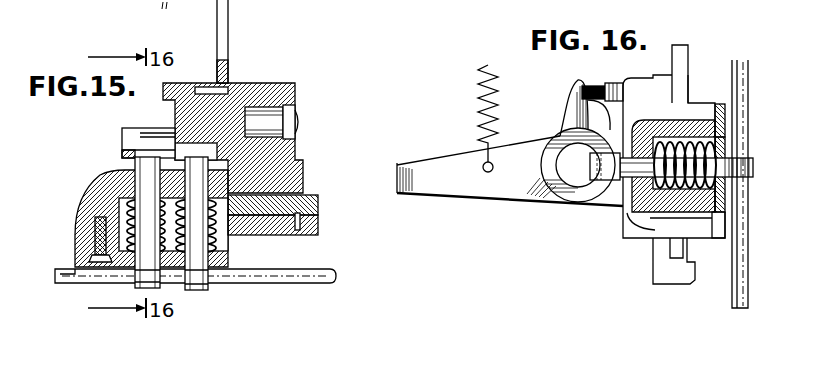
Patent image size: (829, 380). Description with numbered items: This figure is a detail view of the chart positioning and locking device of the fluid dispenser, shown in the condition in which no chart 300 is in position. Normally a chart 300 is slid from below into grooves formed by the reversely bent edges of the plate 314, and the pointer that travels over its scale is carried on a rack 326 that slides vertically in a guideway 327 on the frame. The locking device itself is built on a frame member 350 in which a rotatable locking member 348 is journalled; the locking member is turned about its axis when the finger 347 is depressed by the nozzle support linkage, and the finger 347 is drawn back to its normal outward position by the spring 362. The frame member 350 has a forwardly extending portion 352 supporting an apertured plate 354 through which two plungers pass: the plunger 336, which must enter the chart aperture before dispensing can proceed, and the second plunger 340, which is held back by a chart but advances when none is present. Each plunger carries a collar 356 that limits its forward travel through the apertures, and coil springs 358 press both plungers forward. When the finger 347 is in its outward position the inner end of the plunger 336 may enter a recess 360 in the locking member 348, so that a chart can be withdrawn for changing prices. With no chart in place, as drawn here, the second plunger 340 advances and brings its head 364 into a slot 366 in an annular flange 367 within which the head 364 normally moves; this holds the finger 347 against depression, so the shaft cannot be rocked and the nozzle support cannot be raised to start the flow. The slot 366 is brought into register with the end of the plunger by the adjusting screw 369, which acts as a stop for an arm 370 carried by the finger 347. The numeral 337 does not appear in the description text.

In FIG. 15, the chart 300 is at (293, 284).
In FIG. 16, the chart 300 is at (740, 280).
In FIG. 15, the plate 314 is at (317, 272).
In FIG. 16, the plate 314 is at (730, 300).
In FIG. 15, the rack 326 is at (283, 225).
In FIG. 16, the rack 326 is at (682, 53).
In FIG. 15, the guideway 327 is at (322, 212).
In FIG. 16, the guideway 327 is at (662, 276).
In FIG. 15, the plunger 336 is at (200, 290).
In FIG. 15, the bar 337 is at (92, 3).
In FIG. 15, the second plunger 340 is at (135, 287).
In FIG. 16, the second plunger 340 is at (723, 167).
In FIG. 15, the finger 347 is at (222, 20).
In FIG. 16, the finger 347 is at (451, 167).
In FIG. 15, the locking member 348 is at (180, 97).
In FIG. 15, the frame member 350 is at (265, 88).
In FIG. 16, the frame member 350 is at (616, 203).
In FIG. 15, the forwardly extending portion 352 is at (88, 210).
In FIG. 16, the forwardly extending portion 352 is at (628, 258).
In FIG. 16, the apertured plate 354 is at (723, 98).
In FIG. 15, the collar 356 is at (222, 252).
In FIG. 16, the collar 356 is at (680, 147).
In FIG. 15, the coil spring 358 is at (135, 207).
In FIG. 16, the coil spring 358 is at (728, 118).
In FIG. 15, the recess 360 is at (199, 152).
In FIG. 16, the spring 362 is at (477, 78).
In FIG. 15, the head 364 is at (123, 137).
In FIG. 16, the head 364 is at (580, 203).
In FIG. 16, the slot 366 is at (597, 206).
In FIG. 16, the annular flange 367 is at (549, 210).
In FIG. 16, the adjusting screw 369 is at (588, 84).
In FIG. 16, the arm 370 is at (566, 112).